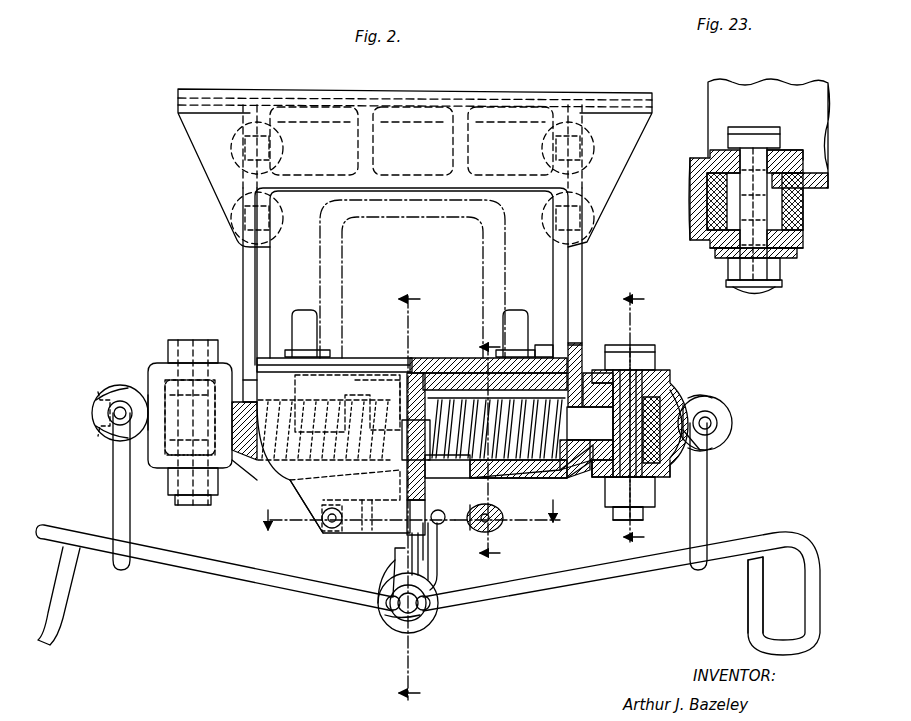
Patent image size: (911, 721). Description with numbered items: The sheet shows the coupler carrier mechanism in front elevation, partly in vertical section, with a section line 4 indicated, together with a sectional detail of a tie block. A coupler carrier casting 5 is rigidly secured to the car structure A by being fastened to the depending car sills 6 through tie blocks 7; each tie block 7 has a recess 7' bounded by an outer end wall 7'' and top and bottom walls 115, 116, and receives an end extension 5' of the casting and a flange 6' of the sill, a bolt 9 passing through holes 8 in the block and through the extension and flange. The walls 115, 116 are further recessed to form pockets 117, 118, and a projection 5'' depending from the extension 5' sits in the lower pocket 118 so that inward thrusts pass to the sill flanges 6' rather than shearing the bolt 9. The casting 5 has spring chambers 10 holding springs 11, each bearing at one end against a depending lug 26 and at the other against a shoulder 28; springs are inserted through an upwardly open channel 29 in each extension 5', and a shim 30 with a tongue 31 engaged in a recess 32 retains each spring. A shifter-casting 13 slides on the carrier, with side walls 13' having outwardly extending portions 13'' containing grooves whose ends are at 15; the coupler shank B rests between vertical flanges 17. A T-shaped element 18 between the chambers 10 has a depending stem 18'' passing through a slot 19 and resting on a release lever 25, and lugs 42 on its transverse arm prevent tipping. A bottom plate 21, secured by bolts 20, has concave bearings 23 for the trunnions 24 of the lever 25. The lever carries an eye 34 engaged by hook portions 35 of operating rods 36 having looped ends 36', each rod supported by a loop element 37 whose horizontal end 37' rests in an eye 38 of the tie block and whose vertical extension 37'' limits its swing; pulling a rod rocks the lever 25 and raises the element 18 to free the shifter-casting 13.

In FIG. 2, the car structure A is at (532, 99).
In FIG. 2, the coupler shank B is at (507, 265).
In FIG. 2, the section line 4 is at (409, 499).
In FIG. 2, the coupler carrier casting 5 is at (412, 451).
In FIG. 2, the end extension 5' is at (625, 509).
In FIG. 23, the end extension 5' is at (816, 210).
In FIG. 2, the projection 5'' is at (695, 491).
In FIG. 23, the projection 5'' is at (766, 284).
In FIG. 2, the car sill 6 is at (411, 253).
In FIG. 23, the car sill 6 is at (769, 122).
In FIG. 2, the sill flange 6' is at (413, 363).
In FIG. 23, the sill flange 6' is at (800, 194).
In FIG. 2, the tie block 7 is at (411, 437).
In FIG. 23, the tie block 7 is at (723, 199).
In FIG. 2, the recess 7' is at (695, 412).
In FIG. 2, the outer end wall 7'' is at (393, 448).
In FIG. 23, the outer end wall 7'' is at (727, 201).
In FIG. 2, the holes 8 is at (663, 370).
In FIG. 23, the holes 8 is at (787, 150).
In FIG. 2, the bolt 9 is at (638, 355).
In FIG. 23, the bolt 9 is at (762, 135).
In FIG. 2, the spring chamber 10 is at (328, 468).
In FIG. 2, the spring 11 is at (300, 468).
In FIG. 2, the coupler shifter-casting 13 is at (546, 342).
In FIG. 2, the side-wall 13' is at (301, 518).
In FIG. 2, the outwardly extending portion 13'' is at (377, 367).
In FIG. 2, the groove end 15 is at (352, 378).
In FIG. 2, the vertical flange 17 is at (297, 313).
In FIG. 2, the T-shaped element 18 is at (423, 406).
In FIG. 2, the depending stem 18'' is at (433, 508).
In FIG. 2, the slot 19 is at (445, 458).
In FIG. 2, the bolt 20 is at (330, 530).
In FIG. 2, the bottom plate 21 is at (436, 540).
In FIG. 2, the concave bearing portion 23 is at (368, 560).
In FIG. 2, the trunnion 24 is at (372, 510).
In FIG. 2, the release lever 25 is at (387, 578).
In FIG. 2, the depending lug 26 is at (440, 372).
In FIG. 2, the shoulder 28 is at (245, 462).
In FIG. 2, the channel 29 is at (590, 423).
In FIG. 2, the shim 30 is at (255, 417).
In FIG. 2, the tongue 31 is at (588, 355).
In FIG. 2, the recess 32 is at (570, 345).
In FIG. 2, the eye 34 is at (418, 632).
In FIG. 2, the hook portion 35 is at (392, 572).
In FIG. 2, the operating rod 36 is at (428, 590).
In FIG. 2, the looped outer end 36' is at (400, 596).
In FIG. 2, the loop element 37 is at (414, 491).
In FIG. 2, the horizontal end portion 37' is at (417, 429).
In FIG. 2, the vertical extension 37'' is at (400, 402).
In FIG. 2, the eye 38 is at (90, 407).
In FIG. 2, the lug 42 is at (404, 366).
In FIG. 2, the top wall 115 is at (590, 355).
In FIG. 23, the top wall 115 is at (803, 160).
In FIG. 2, the bottom wall 116 is at (598, 478).
In FIG. 23, the bottom wall 116 is at (790, 250).
In FIG. 2, the upper pocket 117 is at (690, 372).
In FIG. 23, the upper pocket 117 is at (712, 152).
In FIG. 2, the lower pocket 118 is at (700, 453).
In FIG. 23, the lower pocket 118 is at (718, 258).